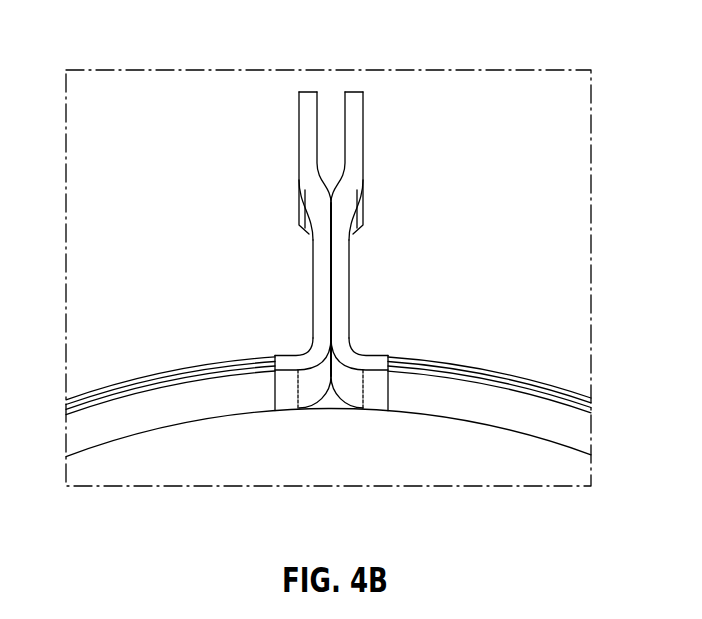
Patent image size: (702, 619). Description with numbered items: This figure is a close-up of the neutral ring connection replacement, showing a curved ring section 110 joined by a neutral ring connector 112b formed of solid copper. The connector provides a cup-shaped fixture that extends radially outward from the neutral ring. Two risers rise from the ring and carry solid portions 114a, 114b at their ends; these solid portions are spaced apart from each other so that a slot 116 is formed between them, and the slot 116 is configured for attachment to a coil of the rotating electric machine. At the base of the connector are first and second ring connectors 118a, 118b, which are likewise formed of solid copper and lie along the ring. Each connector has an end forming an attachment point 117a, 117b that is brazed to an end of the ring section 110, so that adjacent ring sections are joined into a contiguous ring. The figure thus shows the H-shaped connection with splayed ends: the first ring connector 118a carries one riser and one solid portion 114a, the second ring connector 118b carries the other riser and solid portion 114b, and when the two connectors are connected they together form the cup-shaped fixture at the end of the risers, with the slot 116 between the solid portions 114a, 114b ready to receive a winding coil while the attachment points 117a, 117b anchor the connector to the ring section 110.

The ring section 110 is at (125, 380).
The second neutral ring connector 112b is at (315, 282).
The solid portion 114a is at (300, 98).
The solid portion 114b is at (363, 105).
The slot 116 is at (332, 108).
The first attachment point 117a is at (282, 397).
The second attachment point 117b is at (397, 398).
The first ring connector 118a is at (308, 352).
The second ring connector 118b is at (372, 352).